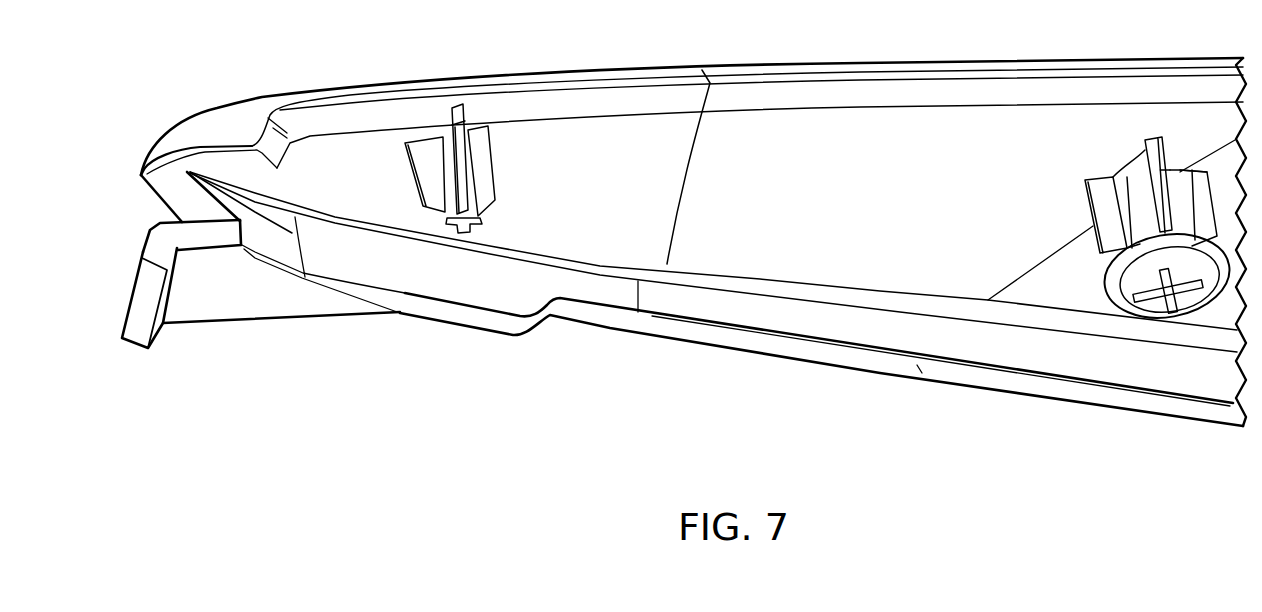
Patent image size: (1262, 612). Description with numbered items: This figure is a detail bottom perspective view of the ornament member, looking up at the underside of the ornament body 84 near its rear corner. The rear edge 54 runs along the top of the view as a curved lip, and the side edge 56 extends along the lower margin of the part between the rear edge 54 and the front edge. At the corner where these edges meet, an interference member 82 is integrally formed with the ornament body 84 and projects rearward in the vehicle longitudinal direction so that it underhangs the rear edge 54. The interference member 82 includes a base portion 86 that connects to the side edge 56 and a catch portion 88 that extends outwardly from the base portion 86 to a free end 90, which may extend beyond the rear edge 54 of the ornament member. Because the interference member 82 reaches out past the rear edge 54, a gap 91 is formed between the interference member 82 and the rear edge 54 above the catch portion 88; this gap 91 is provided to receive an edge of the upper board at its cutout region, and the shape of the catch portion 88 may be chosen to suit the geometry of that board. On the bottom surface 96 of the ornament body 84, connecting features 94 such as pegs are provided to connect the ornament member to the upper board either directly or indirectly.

The rear edge 54 is at (200, 108).
The side edge 56 is at (750, 352).
The interference member 82 is at (105, 341).
The ornament body 84 is at (883, 123).
The base portion 86 is at (358, 280).
The catch portion 88 is at (147, 243).
The free end 90 is at (132, 287).
The gap 91 is at (140, 205).
The connecting features 94 is at (495, 180).
The bottom surface 96 is at (884, 219).